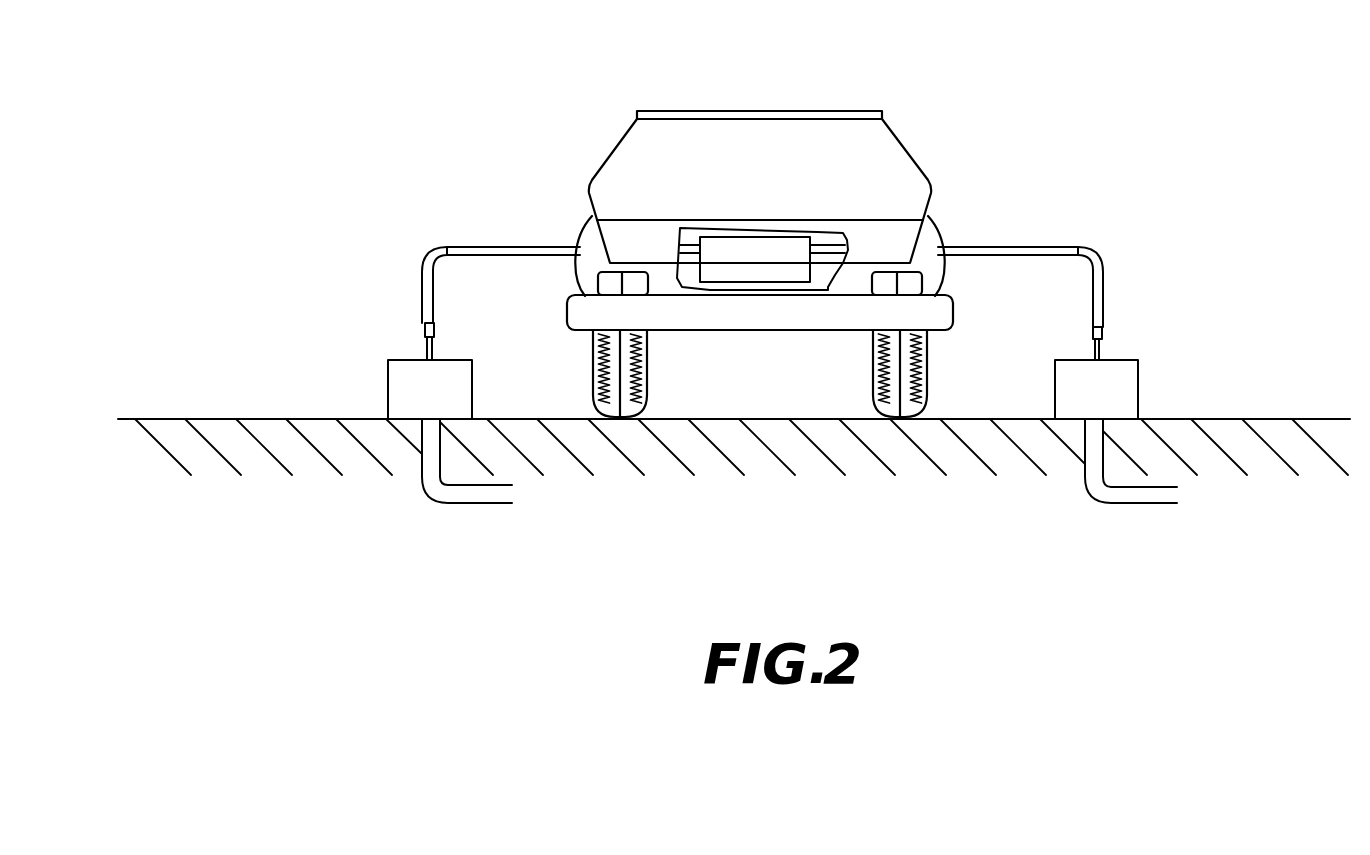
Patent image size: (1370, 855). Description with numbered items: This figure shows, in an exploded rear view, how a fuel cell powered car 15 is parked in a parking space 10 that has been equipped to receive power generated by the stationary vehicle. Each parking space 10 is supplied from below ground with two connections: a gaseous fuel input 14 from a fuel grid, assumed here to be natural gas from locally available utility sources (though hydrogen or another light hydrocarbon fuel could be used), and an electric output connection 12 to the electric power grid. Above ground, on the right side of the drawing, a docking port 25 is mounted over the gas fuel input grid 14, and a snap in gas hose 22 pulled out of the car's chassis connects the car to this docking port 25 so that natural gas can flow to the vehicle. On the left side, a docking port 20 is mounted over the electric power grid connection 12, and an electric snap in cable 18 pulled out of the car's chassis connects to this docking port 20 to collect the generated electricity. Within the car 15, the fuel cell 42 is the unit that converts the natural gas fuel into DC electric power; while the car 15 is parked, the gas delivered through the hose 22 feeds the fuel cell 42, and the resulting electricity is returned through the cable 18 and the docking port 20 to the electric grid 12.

The parking space 10 is at (694, 419).
The electric output connection 12 is at (463, 490).
The gaseous fuel input 14 is at (1134, 495).
The fuel cell powered car 15 is at (866, 105).
The electric snap in cable 18 is at (428, 252).
The docking port 20 is at (387, 373).
The snap in gas hose 22 is at (1098, 258).
The docking port 25 is at (1130, 380).
The fuel cell 42 is at (762, 253).